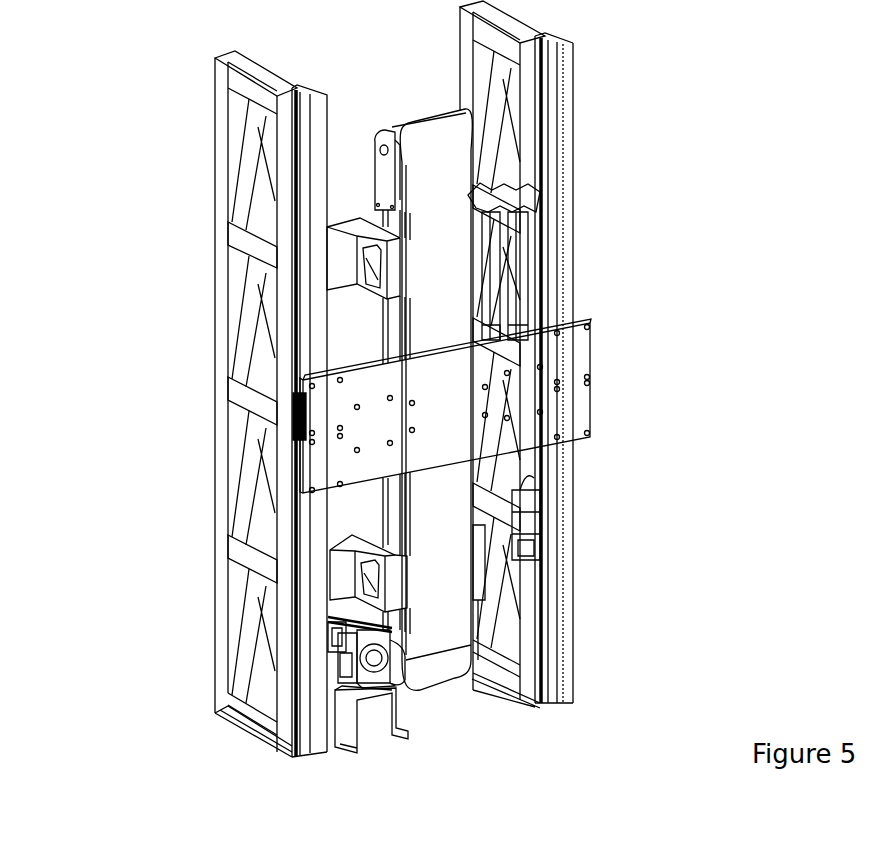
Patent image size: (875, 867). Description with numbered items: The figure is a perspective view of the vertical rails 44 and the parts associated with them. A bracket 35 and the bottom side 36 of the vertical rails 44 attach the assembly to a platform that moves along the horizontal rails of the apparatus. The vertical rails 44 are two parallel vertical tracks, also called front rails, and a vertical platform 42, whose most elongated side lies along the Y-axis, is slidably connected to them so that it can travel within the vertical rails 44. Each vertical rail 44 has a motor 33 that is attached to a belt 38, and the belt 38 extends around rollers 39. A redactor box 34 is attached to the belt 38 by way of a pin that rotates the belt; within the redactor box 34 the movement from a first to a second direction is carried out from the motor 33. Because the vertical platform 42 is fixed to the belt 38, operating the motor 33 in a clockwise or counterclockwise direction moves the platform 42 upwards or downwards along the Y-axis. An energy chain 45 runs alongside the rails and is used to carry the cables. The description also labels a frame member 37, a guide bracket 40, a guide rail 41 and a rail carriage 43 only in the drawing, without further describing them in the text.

The motor 33 is at (327, 625).
The redactor box 34 is at (333, 640).
The bracket 35 is at (345, 705).
The bottom side 36 is at (253, 735).
The tower frame 37 is at (238, 553).
The belt 38 is at (433, 133).
The rollers 39 is at (385, 165).
The guide bracket 40 is at (345, 255).
The guide rails 41 is at (385, 328).
The vertical platform 42 is at (538, 353).
The left linear rail 43 is at (300, 417).
The vertical rails 44 is at (560, 277).
The energy chain 45 is at (533, 478).